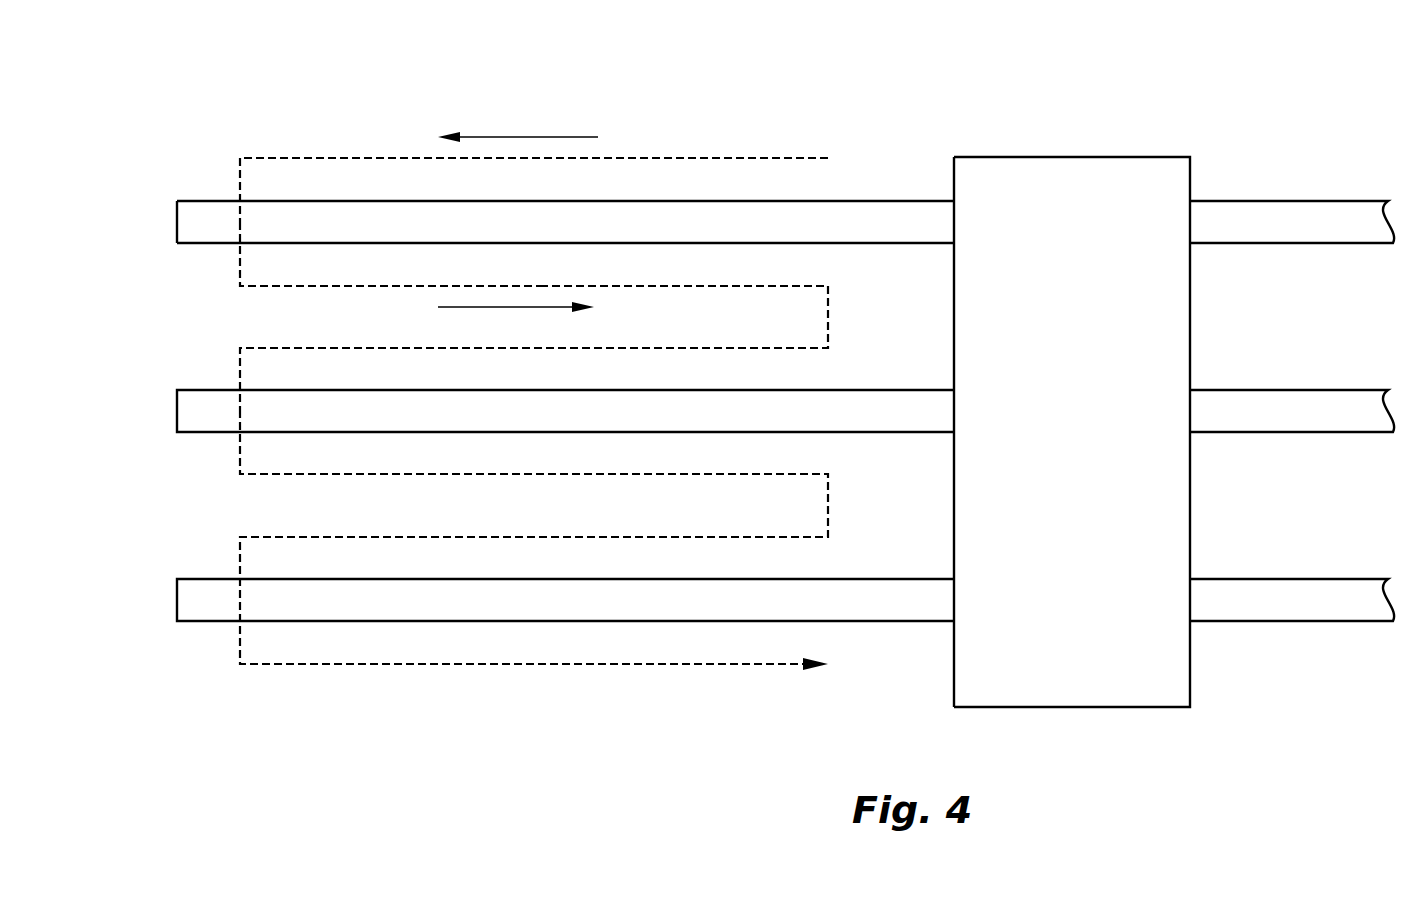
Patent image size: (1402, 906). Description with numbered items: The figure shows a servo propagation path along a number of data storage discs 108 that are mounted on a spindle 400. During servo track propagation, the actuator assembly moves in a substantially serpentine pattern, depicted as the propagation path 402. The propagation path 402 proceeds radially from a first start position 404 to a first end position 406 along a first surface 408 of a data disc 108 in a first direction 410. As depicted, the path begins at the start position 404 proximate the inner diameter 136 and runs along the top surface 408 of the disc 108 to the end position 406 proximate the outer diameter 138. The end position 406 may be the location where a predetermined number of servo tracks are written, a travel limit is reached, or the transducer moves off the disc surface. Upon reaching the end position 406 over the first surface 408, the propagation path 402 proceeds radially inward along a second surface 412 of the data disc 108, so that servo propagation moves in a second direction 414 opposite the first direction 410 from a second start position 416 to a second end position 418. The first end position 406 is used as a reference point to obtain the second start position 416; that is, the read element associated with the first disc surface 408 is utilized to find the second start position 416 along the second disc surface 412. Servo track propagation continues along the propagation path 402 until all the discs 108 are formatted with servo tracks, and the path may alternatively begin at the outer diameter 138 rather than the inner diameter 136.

The data storage disc 108 is at (1300, 222).
The inner diameter 136 is at (935, 168).
The outer diameter 138 is at (134, 208).
The spindle 400 is at (1092, 414).
The propagation path 402 is at (828, 495).
The first start position 404 is at (828, 157).
The first end position 406 is at (240, 158).
The first surface 408 is at (895, 201).
The first direction 410 is at (518, 129).
The second surface 412 is at (896, 243).
The second direction 414 is at (516, 317).
The second start position 416 is at (240, 286).
The second end position 418 is at (827, 308).